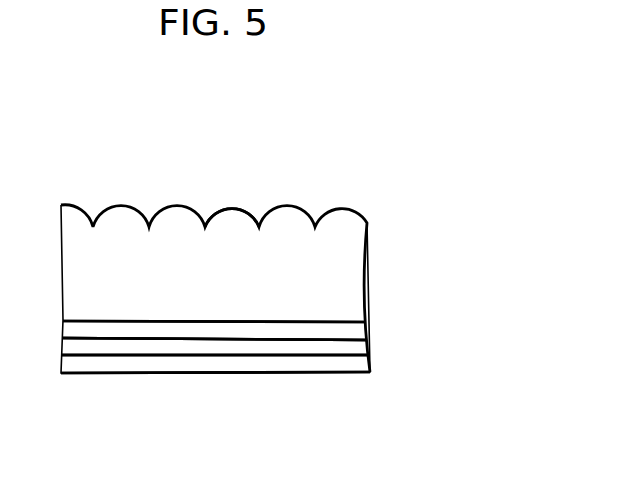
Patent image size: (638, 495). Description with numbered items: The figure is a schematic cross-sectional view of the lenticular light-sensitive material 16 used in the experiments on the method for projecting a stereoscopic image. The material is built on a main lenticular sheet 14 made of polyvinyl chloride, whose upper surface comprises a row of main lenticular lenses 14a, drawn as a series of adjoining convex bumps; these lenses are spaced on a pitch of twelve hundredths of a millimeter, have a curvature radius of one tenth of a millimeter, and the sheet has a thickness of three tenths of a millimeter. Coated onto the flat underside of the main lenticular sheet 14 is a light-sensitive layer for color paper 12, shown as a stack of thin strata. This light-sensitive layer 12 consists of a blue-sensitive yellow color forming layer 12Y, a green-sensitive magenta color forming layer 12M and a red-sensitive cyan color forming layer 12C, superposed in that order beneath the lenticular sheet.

The recording medium 16 is at (445, 173).
The main lenticular sheet 14 is at (358, 252).
The main lenticular lenses 14a is at (233, 229).
The light-sensitive layer for color paper 12 is at (495, 272).
The blue-sensitive yellow color forming layer 12Y is at (360, 330).
The green-sensitive magenta color forming layer 12M is at (365, 343).
The red-sensitive cyan color forming layer 12C is at (365, 367).